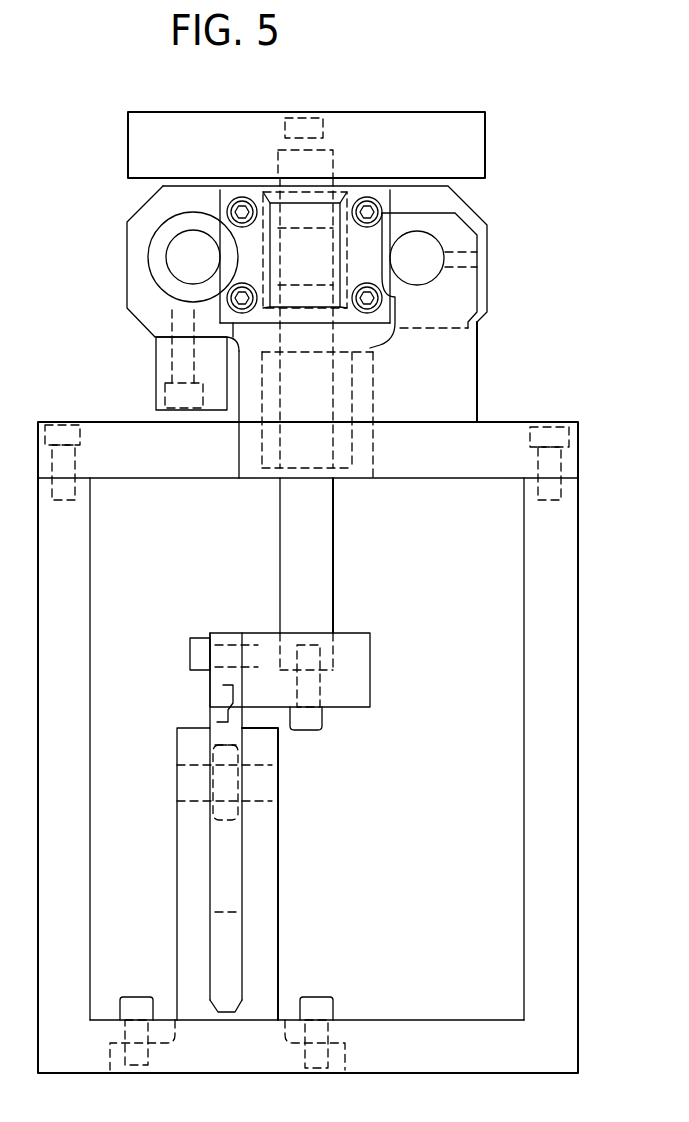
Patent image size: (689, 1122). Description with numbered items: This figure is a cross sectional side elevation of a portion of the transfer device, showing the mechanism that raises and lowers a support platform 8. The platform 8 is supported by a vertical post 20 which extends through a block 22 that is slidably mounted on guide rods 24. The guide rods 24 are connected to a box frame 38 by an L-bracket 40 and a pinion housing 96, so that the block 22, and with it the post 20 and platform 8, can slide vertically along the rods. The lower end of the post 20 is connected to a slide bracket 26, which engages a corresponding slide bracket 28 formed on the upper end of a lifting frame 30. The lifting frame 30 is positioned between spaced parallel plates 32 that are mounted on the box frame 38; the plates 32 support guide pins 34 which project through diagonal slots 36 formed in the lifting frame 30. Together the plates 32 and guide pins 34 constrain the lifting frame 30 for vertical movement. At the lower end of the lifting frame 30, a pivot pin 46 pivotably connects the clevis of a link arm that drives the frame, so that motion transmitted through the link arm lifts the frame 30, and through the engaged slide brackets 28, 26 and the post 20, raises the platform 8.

The support platform 8 is at (442, 134).
The vertical post 20 is at (318, 543).
The block 22 is at (147, 217).
The guide rod 24 is at (180, 262).
The slide bracket 26 is at (240, 618).
The slide bracket 28 is at (232, 693).
The lifting frame 30 is at (225, 845).
The plate 32 is at (262, 862).
The guide pin 34 is at (195, 783).
The diagonal slot 36 is at (215, 745).
The box frame 38 is at (555, 702).
The L-bracket 40 is at (452, 380).
The pivot pin 46 is at (215, 950).
The pinion housing 96 is at (170, 358).